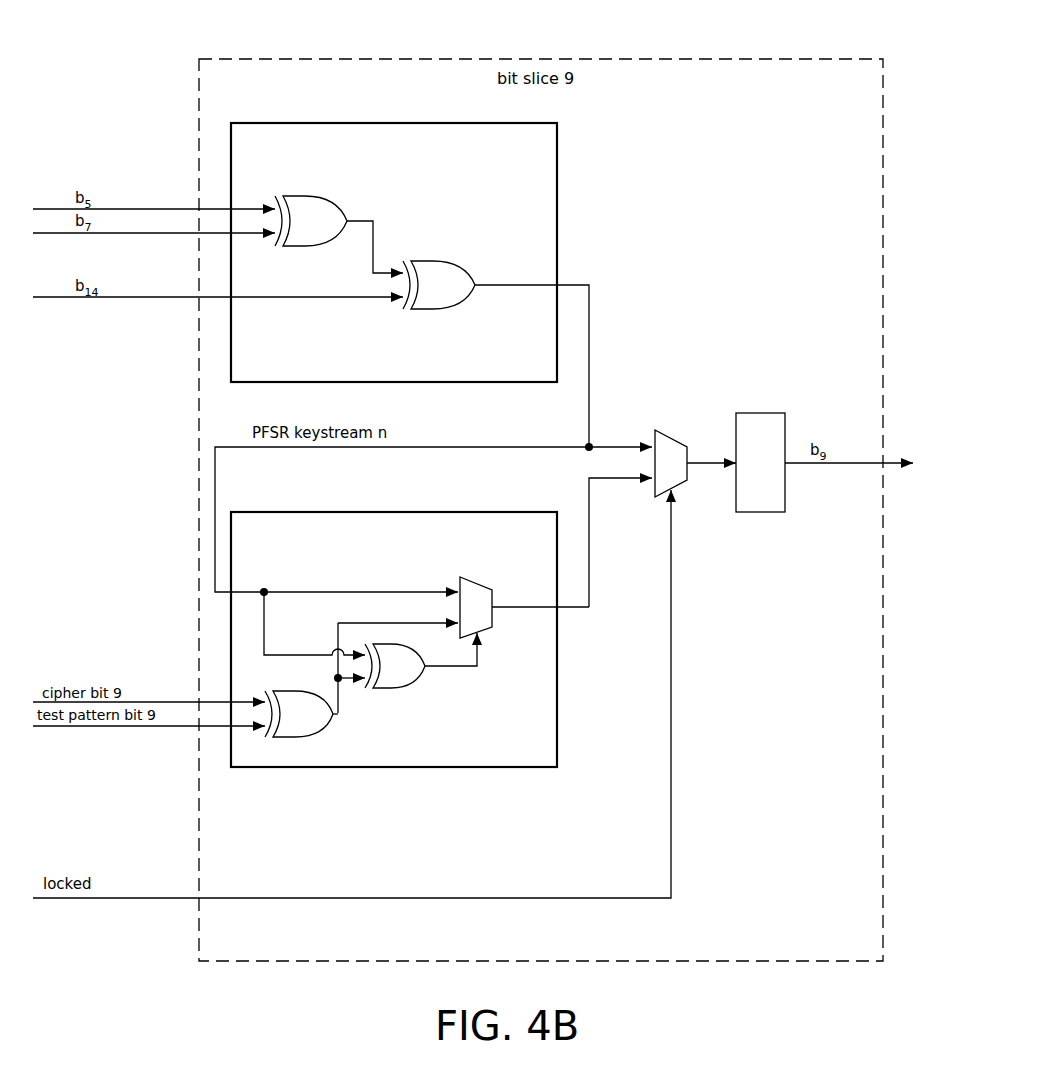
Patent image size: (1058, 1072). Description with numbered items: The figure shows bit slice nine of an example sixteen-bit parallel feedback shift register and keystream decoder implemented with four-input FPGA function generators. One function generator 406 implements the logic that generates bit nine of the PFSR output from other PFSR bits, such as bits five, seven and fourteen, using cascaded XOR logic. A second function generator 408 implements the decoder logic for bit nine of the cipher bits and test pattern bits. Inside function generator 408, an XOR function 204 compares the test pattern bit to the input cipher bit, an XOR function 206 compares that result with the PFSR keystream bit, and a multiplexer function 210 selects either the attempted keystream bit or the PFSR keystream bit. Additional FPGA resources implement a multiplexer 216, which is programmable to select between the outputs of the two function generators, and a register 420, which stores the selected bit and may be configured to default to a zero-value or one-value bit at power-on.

The function generator 406 is at (394, 123).
The function generator 408 is at (394, 512).
The multiplexer function 216 is at (657, 431).
The register 420 is at (760, 413).
The multiplexer function 210 is at (462, 578).
The XOR function 206 is at (398, 688).
The XOR function 204 is at (318, 732).